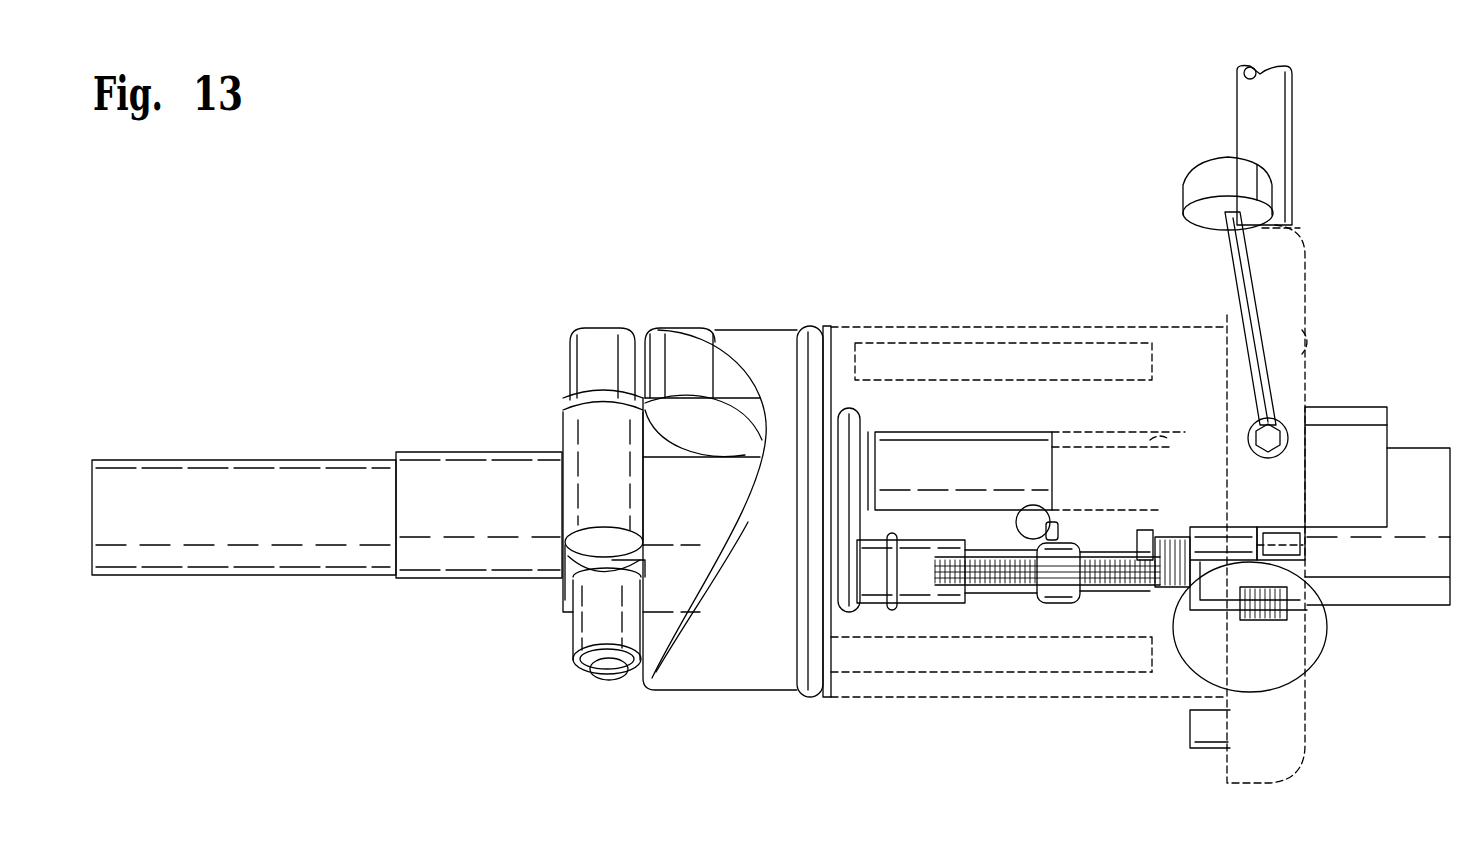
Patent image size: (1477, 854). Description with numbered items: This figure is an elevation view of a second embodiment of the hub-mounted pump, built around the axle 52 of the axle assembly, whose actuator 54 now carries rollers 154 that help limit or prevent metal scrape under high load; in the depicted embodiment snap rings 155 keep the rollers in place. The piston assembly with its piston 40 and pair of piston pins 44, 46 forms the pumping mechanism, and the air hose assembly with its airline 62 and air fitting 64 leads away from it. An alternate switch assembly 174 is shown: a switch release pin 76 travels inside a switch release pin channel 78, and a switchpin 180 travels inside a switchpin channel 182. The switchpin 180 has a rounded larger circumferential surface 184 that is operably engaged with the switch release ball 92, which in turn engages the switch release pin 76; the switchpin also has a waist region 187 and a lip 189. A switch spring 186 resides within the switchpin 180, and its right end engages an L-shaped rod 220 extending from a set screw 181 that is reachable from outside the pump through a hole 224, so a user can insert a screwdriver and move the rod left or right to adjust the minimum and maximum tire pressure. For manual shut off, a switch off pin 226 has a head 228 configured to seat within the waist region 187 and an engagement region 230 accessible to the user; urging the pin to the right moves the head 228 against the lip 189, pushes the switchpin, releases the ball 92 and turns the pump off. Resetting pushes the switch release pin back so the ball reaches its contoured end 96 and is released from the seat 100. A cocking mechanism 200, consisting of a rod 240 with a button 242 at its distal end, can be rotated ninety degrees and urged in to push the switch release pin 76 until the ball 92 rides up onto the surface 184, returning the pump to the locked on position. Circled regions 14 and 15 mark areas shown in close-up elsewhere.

The axle 52 is at (232, 458).
The actuator 54 is at (563, 437).
The rollers 154 is at (572, 382).
The snap rings 155 is at (596, 672).
The piston 40 is at (745, 330).
The second piston pin 46 is at (905, 345).
The piston pin 44 is at (898, 672).
The switchpin 180 is at (1008, 620).
The switch release pin 76 is at (915, 432).
The switch release pin channel 78 is at (1162, 437).
The switchpin channel 182 is at (992, 606).
The rounded larger circumferential surface 184 is at (1058, 522).
The switch release ball 92 is at (1030, 512).
The contoured end 96 is at (1052, 524).
The seat 100 is at (1008, 538).
The waist region 187 is at (1105, 600).
The lip 189 is at (1155, 602).
The head 228 is at (1150, 527).
The switch spring 186 is at (1178, 555).
The switch off pin 226 is at (1292, 528).
The engagement region 230 is at (1312, 545).
The L-shaped rod 220 is at (1208, 612).
The set screw 181 is at (1250, 622).
The hole 224 is at (1296, 608).
The detail view FIG. 14 is at (1370, 527).
The detail view FIG. 15 is at (1125, 592).
The airline 62 is at (1237, 148).
The button 242 is at (1180, 192).
The rod 240 is at (1237, 312).
The air fitting 64 is at (1290, 232).
The cocking mechanism 200 is at (1148, 262).
The switch assembly 174 is at (818, 222).